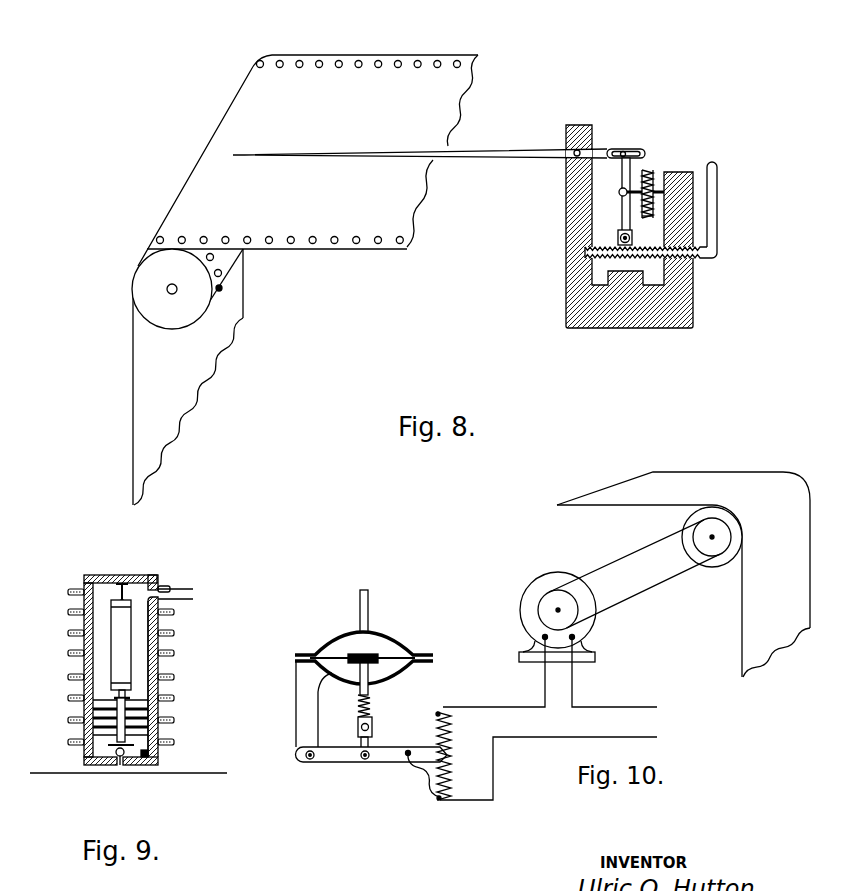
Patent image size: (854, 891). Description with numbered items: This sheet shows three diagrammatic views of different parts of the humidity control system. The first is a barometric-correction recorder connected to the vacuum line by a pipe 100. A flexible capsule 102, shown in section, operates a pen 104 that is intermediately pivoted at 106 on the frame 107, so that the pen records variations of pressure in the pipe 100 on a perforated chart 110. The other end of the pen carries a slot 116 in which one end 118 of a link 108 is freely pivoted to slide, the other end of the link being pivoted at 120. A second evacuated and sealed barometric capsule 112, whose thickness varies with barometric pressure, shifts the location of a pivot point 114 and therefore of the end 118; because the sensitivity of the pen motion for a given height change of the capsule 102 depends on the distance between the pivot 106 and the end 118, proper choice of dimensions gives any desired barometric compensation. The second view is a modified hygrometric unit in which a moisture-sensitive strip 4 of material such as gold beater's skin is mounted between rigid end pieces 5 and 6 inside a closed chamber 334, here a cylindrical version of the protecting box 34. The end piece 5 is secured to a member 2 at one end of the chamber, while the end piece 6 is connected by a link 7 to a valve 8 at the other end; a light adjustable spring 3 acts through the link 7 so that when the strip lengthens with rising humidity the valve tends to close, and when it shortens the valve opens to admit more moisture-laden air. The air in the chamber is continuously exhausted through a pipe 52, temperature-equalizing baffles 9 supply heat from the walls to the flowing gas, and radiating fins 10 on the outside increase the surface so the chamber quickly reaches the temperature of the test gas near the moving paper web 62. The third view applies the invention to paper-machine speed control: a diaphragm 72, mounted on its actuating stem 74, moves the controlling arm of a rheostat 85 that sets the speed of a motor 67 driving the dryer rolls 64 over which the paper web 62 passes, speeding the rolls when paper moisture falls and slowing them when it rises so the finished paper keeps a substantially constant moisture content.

In FIG. 8, the chart 110 is at (362, 56).
In FIG. 8, the pen 104 is at (238, 154).
In FIG. 8, the pivot 106 is at (567, 132).
In FIG. 8, the frame 107 is at (571, 181).
In FIG. 8, the link 108 is at (618, 176).
In FIG. 8, the slot 116 is at (647, 150).
In FIG. 8, the link end 118 is at (633, 150).
In FIG. 8, the pivot point 114 is at (632, 184).
In FIG. 8, the barometric capsule 112 is at (653, 217).
In FIG. 8, the pivot 120 is at (618, 237).
In FIG. 8, the flexible capsule 102 is at (585, 253).
In FIG. 8, the pipe 100 is at (718, 219).
In FIG. 9, the box 34 is at (96, 592).
In FIG. 9, the member 2 is at (138, 575).
In FIG. 9, the end piece 5 is at (127, 603).
In FIG. 9, the pipe 52 is at (190, 590).
In FIG. 9, the temperature-equalizing fins 10 is at (68, 612).
In FIG. 9, the moisture-sensitive strip 4 is at (122, 653).
In FIG. 9, the chamber 334 is at (147, 669).
In FIG. 9, the end piece 6 is at (130, 689).
In FIG. 9, the link 7 is at (125, 718).
In FIG. 9, the temperature-equalizing baffles 9 is at (98, 726).
In FIG. 9, the valve 8 is at (113, 749).
In FIG. 9, the spring 3 is at (147, 753).
In FIG. 9, the paper web 62 is at (203, 774).
In FIG. 10, the paper web 62 is at (731, 491).
In FIG. 10, the dryer rolls 64 is at (700, 536).
In FIG. 10, the motor 67 is at (535, 591).
In FIG. 10, the actuating rod 74 is at (369, 607).
In FIG. 10, the diaphragm 72 is at (399, 656).
In FIG. 10, the rheostat 85 is at (450, 766).